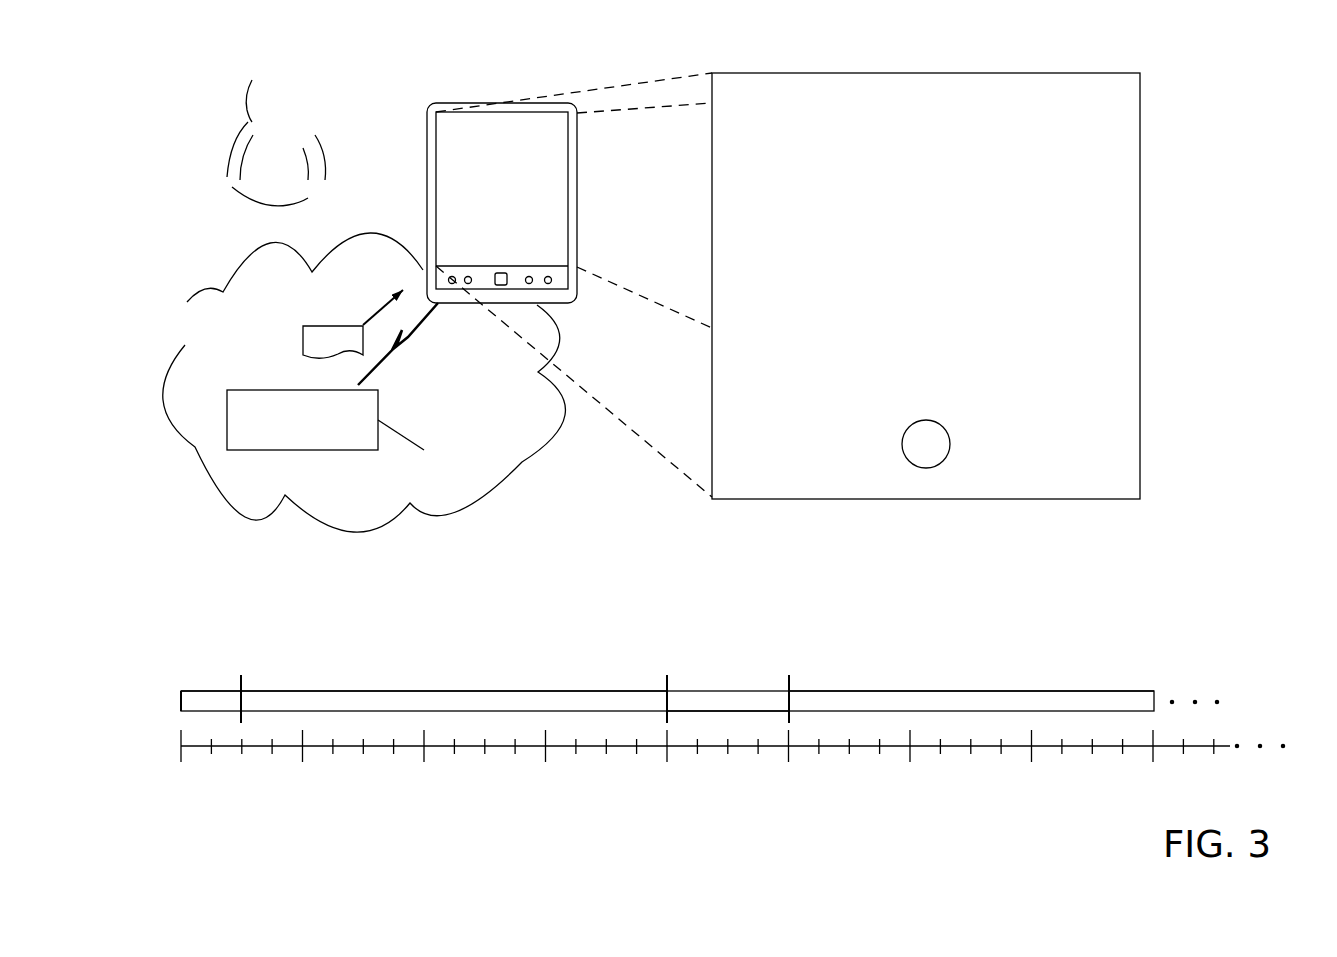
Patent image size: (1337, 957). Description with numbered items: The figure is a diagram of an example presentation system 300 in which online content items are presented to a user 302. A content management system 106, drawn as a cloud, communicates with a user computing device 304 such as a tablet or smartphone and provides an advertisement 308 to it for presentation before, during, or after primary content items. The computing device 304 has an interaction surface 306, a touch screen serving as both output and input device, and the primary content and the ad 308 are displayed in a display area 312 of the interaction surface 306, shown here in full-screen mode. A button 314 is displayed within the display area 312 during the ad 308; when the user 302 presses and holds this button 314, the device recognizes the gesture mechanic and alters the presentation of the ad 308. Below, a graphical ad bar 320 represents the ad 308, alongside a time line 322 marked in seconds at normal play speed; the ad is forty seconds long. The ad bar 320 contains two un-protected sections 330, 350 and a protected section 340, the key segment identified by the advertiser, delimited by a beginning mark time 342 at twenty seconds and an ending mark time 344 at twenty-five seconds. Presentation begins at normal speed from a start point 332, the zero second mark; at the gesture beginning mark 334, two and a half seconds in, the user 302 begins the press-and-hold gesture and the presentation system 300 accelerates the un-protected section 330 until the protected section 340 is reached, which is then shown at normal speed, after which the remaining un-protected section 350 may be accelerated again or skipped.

The content management system 106 is at (572, 493).
The presentation system 300 is at (574, 290).
The user 302 is at (252, 122).
The user computing device 304 is at (433, 105).
The interaction surface 306 is at (433, 148).
The advertisement 308 is at (303, 337).
The display area 312 is at (1003, 225).
The button 314 is at (952, 425).
The ad bar 320 is at (336, 622).
The time line 322 is at (280, 818).
The un-protected section 330 is at (430, 697).
The start point 332 is at (181, 668).
The gesture beginning mark 334 is at (241, 668).
The protected section 340 is at (739, 700).
The beginning mark time 342 is at (667, 668).
The ending mark time 344 is at (789, 668).
The un-protected section 350 is at (890, 697).